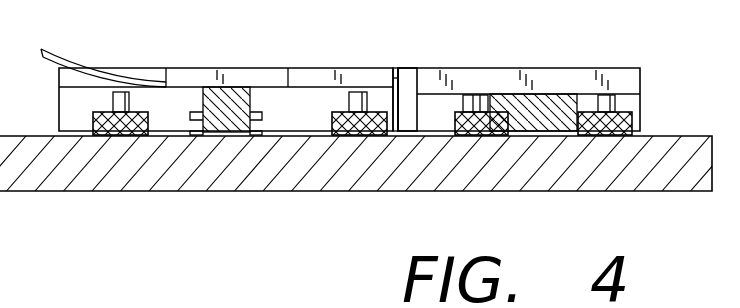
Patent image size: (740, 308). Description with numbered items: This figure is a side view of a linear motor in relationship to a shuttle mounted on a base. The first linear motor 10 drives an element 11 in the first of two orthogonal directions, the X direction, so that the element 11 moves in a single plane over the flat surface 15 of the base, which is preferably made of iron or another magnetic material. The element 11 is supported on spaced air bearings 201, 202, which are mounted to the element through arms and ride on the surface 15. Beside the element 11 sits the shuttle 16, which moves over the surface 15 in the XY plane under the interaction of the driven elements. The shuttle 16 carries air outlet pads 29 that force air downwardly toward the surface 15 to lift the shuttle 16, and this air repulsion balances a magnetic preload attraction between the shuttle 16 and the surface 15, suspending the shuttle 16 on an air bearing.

The first linear motor 10 is at (195, 72).
The element 11 is at (387, 68).
The shuttle 16 is at (557, 68).
The flat surface 15 is at (255, 191).
The air bearing 201 is at (118, 135).
The air bearing 202 is at (357, 135).
The air outlet pads 29 is at (480, 135).